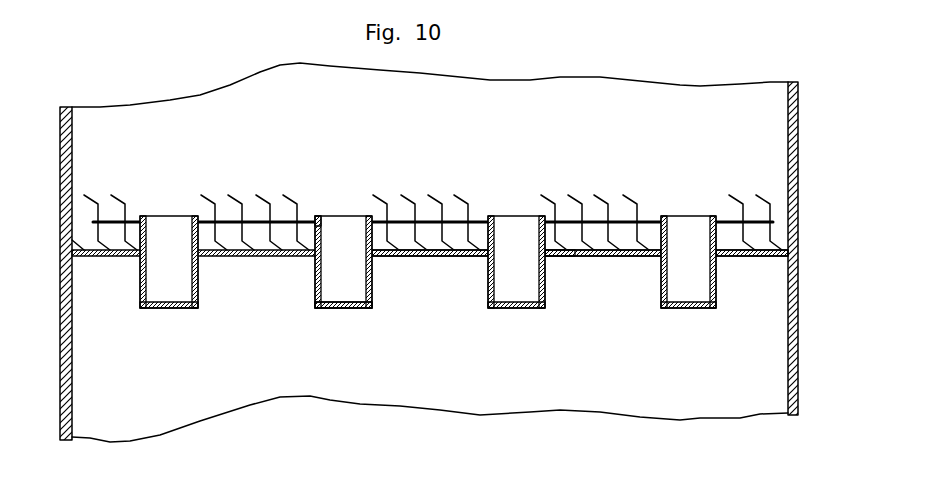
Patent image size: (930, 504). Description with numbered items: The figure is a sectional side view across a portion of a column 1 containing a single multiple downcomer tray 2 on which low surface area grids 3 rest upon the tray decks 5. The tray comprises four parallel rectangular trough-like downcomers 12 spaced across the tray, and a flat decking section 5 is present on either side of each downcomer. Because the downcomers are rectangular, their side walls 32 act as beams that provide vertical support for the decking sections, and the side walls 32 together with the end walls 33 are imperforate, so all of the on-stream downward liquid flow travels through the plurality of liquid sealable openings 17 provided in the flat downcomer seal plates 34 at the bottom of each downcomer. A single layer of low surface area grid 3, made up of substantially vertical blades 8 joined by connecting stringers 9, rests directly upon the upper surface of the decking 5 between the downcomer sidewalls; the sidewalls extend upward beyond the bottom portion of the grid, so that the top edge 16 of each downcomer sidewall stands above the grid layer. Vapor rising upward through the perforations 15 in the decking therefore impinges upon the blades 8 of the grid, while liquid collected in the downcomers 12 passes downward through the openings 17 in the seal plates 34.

The column 1 is at (806, 161).
The multiple downcomer tray 2 is at (769, 266).
The low surface area grid 3 is at (288, 197).
The tray deck 5 is at (645, 257).
The blade 8 is at (210, 198).
The connecting stringer 9 is at (427, 220).
The downcomer 12 is at (229, 273).
The perforation 15 is at (453, 257).
The top edge 16 is at (317, 217).
The liquid sealable opening 17 is at (353, 312).
The side wall 32 is at (548, 260).
The end wall 33 is at (170, 270).
The downcomer seal plate 34 is at (513, 312).